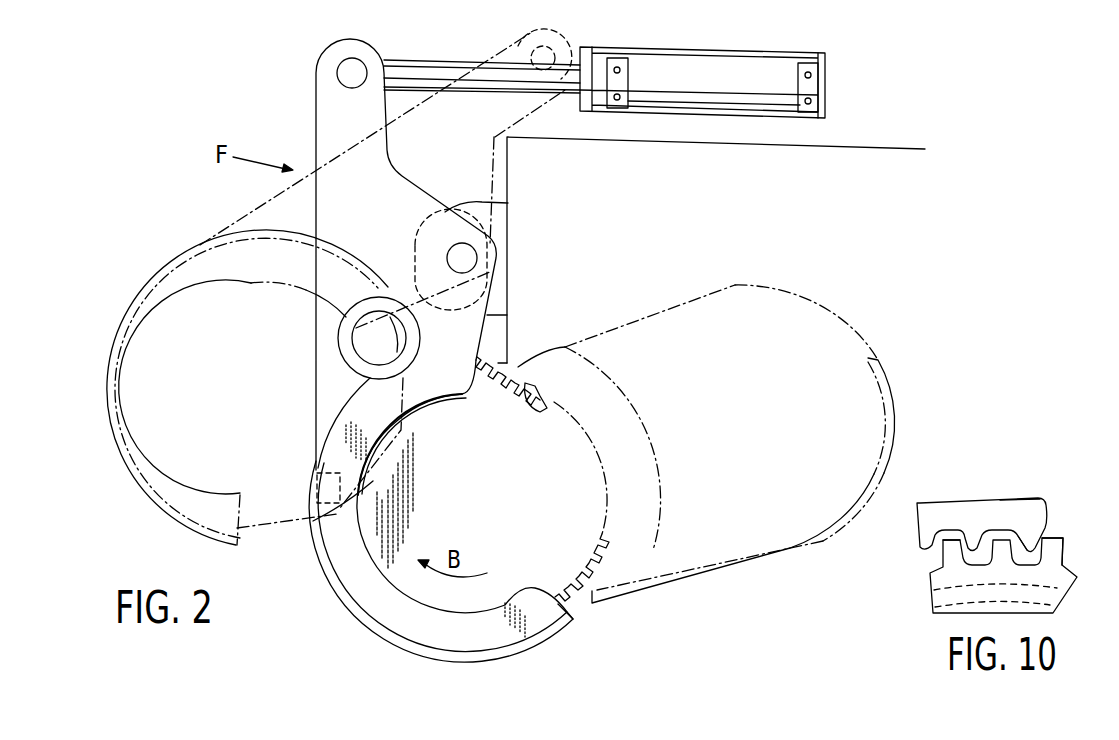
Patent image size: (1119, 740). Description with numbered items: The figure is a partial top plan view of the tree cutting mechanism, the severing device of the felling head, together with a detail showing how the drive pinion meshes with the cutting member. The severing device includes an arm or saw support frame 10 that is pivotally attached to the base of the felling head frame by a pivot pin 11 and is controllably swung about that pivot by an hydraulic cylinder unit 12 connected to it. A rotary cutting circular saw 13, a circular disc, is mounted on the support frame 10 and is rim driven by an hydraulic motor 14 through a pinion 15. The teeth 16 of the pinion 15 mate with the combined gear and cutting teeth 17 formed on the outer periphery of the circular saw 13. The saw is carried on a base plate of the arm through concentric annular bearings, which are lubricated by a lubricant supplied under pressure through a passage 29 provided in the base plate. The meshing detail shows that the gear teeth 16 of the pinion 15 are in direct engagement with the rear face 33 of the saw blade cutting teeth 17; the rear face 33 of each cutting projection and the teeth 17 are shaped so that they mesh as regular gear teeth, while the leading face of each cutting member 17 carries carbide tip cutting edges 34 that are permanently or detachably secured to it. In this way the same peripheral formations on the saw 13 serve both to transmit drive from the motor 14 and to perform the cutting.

In FIG. 2, the arm or saw support frame 10 is at (318, 127).
In FIG. 2, the pivot pin 11 is at (467, 257).
In FIG. 2, the hydraulic cylinder unit 12 is at (827, 92).
In FIG. 2, the rotary cutting circular saw 13 is at (513, 570).
In FIG. 10, the rotary cutting circular saw 13 is at (1037, 597).
In FIG. 2, the hydraulic motor 14 is at (363, 339).
In FIG. 10, the pinion 15 is at (1018, 508).
In FIG. 10, the teeth of the pinion 16 is at (1028, 532).
In FIG. 2, the combined gear and cutting teeth 17 is at (533, 392).
In FIG. 10, the combined gear and cutting teeth 17 is at (1050, 553).
In FIG. 2, the passage 29 is at (627, 521).
In FIG. 10, the rear face 33 is at (943, 550).
In FIG. 2, the carbide tip cutting edges 34 is at (520, 365).
In FIG. 10, the carbide tip cutting edges 34 is at (970, 537).